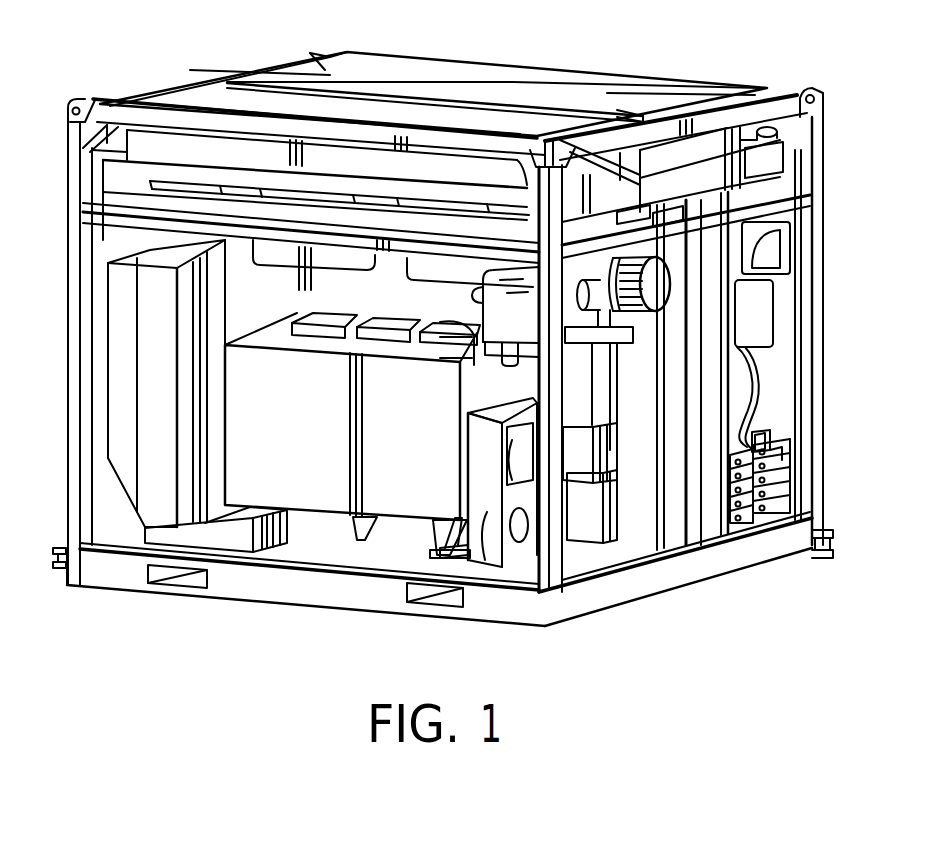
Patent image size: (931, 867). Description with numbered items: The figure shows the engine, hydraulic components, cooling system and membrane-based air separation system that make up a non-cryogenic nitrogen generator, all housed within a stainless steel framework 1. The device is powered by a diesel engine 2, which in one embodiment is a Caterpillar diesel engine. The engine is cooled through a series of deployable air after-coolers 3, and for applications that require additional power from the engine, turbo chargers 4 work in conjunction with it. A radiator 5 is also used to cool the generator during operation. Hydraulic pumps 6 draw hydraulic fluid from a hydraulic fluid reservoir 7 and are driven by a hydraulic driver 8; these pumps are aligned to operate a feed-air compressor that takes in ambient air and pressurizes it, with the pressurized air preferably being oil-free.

The stainless steel framework 1 is at (242, 533).
The diesel engine 2 is at (420, 447).
The deployable air after-coolers 3 is at (205, 92).
The turbo chargers 4 is at (573, 308).
The radiator 5 is at (122, 356).
The hydraulic pumps 6 is at (578, 452).
The hydraulic fluid reservoir 7 is at (383, 350).
The hydraulic driver 8 is at (487, 512).